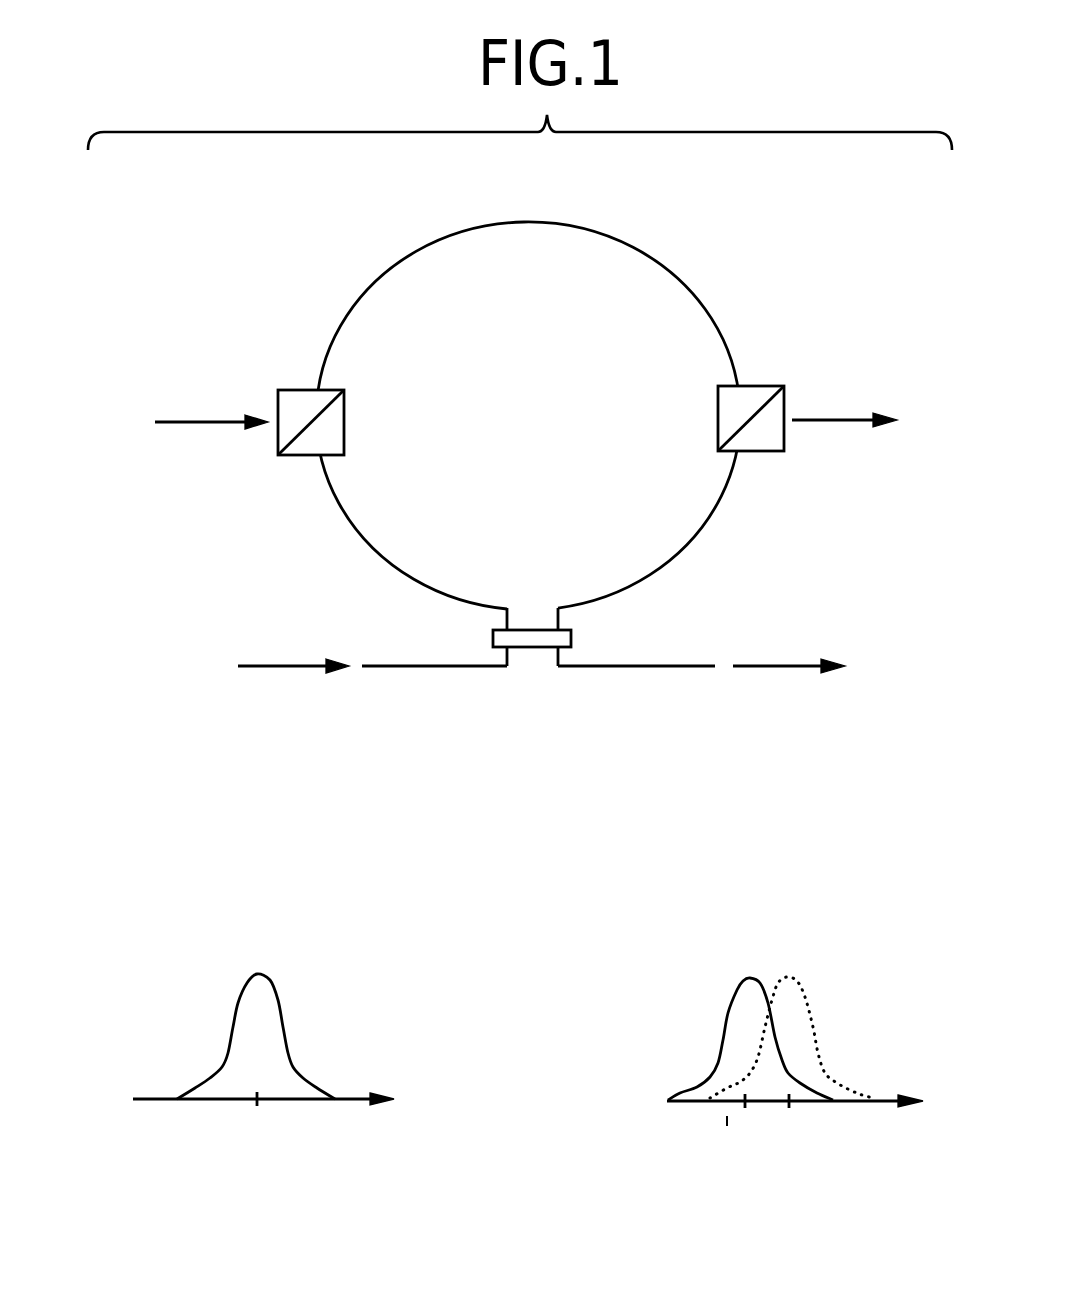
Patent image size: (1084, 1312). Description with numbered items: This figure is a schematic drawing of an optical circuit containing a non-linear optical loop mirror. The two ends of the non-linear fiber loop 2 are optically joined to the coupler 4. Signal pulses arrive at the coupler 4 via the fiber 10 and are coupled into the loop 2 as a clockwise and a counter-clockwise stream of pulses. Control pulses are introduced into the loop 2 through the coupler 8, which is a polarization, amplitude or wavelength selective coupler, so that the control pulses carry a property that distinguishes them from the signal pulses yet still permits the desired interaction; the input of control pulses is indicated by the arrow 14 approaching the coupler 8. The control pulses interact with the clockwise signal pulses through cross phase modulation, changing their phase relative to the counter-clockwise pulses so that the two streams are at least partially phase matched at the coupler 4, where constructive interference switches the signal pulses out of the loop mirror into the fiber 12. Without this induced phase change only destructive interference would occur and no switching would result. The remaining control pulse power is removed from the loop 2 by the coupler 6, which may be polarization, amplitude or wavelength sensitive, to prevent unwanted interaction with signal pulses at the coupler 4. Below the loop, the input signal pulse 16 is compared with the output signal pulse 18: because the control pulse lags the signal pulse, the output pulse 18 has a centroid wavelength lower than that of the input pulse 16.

The non-linear fiber loop 2 is at (605, 234).
The coupler 4 is at (530, 648).
The coupler 6 is at (774, 386).
The coupler 8 is at (285, 390).
The fiber 10 is at (400, 667).
The fiber 12 is at (662, 667).
The input light 14 is at (184, 421).
The input signal pulse 16 is at (283, 1020).
The output signal pulse 18 is at (748, 978).